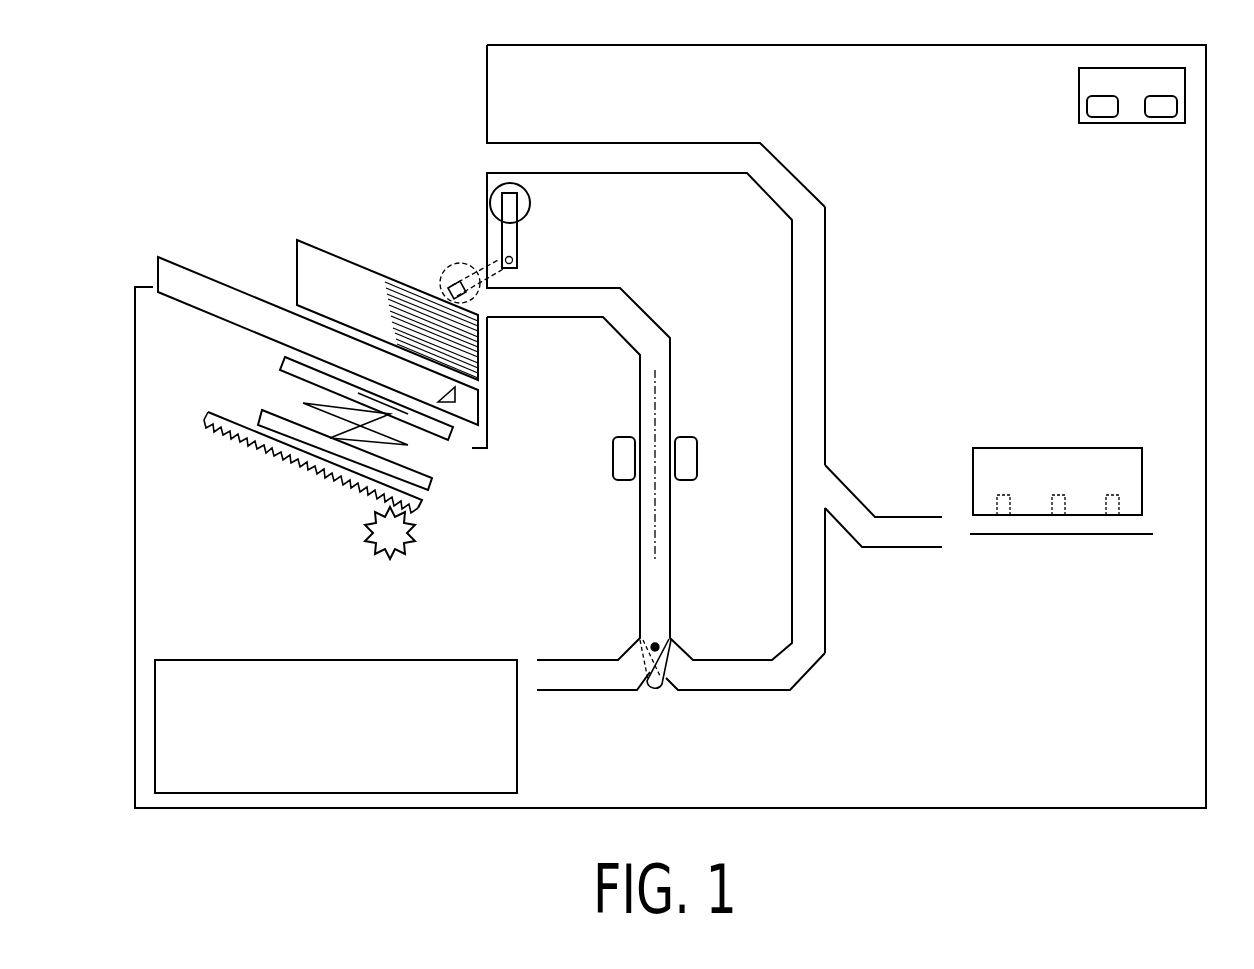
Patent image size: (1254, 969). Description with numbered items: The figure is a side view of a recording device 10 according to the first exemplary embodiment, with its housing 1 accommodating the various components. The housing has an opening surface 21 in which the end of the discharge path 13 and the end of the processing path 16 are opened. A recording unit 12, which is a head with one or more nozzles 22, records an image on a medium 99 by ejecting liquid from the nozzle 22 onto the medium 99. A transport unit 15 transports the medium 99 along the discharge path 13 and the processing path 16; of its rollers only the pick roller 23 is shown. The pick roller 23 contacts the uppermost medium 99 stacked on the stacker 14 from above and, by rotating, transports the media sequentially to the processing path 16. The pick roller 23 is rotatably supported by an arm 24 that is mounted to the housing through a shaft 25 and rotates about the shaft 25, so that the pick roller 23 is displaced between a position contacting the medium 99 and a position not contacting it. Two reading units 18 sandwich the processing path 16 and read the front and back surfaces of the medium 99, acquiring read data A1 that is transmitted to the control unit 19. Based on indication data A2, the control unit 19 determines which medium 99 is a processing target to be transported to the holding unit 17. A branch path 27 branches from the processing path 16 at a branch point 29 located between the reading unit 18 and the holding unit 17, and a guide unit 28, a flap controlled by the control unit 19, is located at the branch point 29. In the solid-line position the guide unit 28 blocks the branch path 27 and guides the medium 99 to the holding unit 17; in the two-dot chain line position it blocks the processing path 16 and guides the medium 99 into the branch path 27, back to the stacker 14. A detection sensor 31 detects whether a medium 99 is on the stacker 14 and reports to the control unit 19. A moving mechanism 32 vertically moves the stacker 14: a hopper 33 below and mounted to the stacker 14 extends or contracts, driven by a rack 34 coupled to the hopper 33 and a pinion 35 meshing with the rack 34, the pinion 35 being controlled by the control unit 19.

The housing 1 is at (1206, 340).
The recording device 10 is at (118, 80).
The recording unit 12 is at (1050, 450).
The discharge path 13 is at (850, 492).
The stacker 14 is at (158, 272).
The transport unit 15 is at (602, 130).
The processing path 16 is at (671, 373).
The holding unit 17 is at (222, 658).
The reading unit 18 is at (613, 458).
The control unit 19 is at (1096, 129).
The opening surface 21 is at (487, 105).
The nozzle 22 is at (1058, 498).
The pick roller 23 is at (490, 196).
The arm 24 is at (520, 232).
The shaft 25 is at (514, 259).
The branch path 27 is at (808, 672).
The guide unit 28 is at (655, 692).
The branch point 29 is at (650, 645).
The detection sensor 31 is at (458, 395).
The moving mechanism 32 is at (378, 476).
The hopper 33 is at (432, 484).
The rack 34 is at (428, 500).
The pinion 35 is at (434, 533).
The medium 99 is at (297, 262).
The read data A1 is at (1100, 117).
The indication data A2 is at (1160, 117).